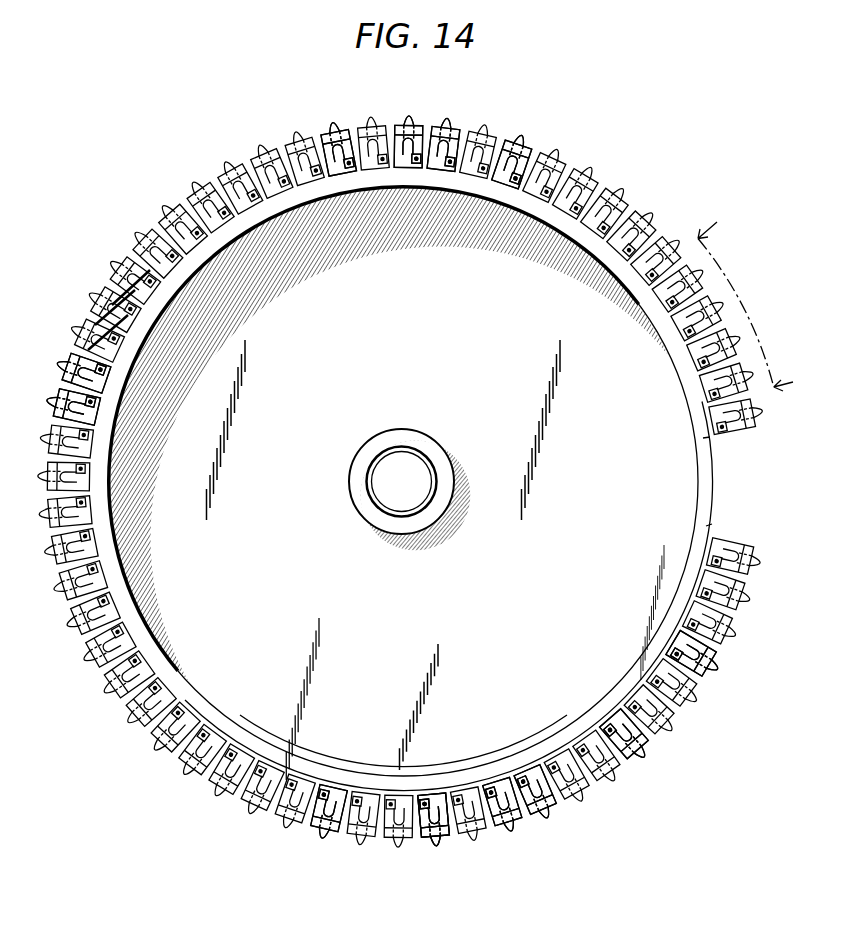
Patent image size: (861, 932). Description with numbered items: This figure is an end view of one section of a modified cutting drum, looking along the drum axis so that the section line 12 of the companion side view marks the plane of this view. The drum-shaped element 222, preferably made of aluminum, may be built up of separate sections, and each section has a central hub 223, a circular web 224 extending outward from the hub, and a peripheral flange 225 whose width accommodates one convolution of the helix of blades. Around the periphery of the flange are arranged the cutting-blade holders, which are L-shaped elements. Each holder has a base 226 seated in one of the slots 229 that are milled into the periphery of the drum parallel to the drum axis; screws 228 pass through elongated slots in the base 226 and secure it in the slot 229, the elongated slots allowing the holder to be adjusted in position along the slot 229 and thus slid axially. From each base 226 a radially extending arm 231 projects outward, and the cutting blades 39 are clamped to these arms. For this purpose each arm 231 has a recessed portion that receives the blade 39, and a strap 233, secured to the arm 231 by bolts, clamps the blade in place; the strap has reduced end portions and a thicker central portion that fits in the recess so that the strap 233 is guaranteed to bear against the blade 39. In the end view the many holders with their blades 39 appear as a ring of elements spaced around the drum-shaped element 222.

The section line 12- 12 is at (745, 316).
The cutting blade 39 is at (443, 125).
The drum-shaped element 222 is at (192, 797).
The hub 223 is at (388, 438).
The circular web 224 is at (672, 516).
The peripheral flange 225 is at (212, 715).
The base 226 is at (77, 342).
The screw 228 is at (326, 140).
The slot 229 is at (510, 802).
The radially extending arm 231 is at (627, 752).
The strap 233 is at (535, 153).